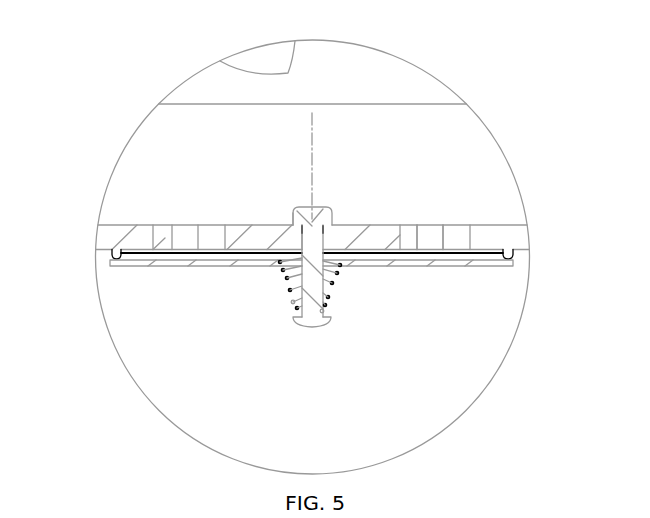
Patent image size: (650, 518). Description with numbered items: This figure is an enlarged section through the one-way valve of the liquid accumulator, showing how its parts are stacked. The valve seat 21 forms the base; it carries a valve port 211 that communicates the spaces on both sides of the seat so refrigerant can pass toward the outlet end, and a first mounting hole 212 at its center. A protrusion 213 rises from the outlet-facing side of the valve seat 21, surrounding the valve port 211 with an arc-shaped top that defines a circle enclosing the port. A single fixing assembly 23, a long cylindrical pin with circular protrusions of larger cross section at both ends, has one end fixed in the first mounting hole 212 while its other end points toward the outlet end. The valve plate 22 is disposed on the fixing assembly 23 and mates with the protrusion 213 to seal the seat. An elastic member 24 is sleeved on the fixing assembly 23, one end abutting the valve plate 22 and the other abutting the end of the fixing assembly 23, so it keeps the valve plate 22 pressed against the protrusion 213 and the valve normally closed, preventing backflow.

The valve seat 21 is at (503, 242).
The valve port 211 is at (440, 238).
The first mounting hole 212 is at (290, 221).
The protrusion 213 is at (114, 251).
The valve plate 22 is at (138, 260).
The fixing assembly 23 is at (325, 208).
The elastic member 24 is at (328, 293).